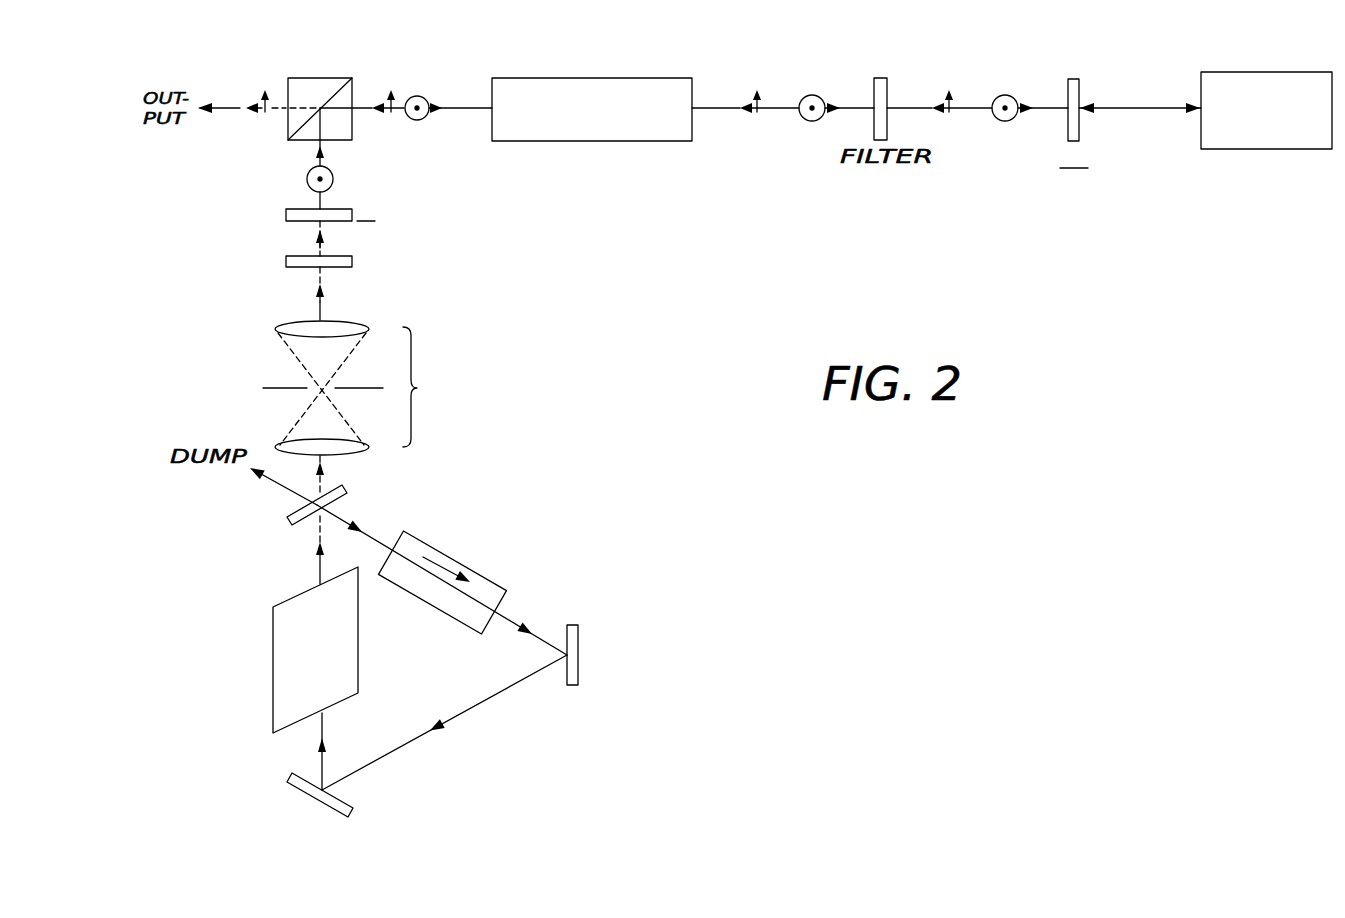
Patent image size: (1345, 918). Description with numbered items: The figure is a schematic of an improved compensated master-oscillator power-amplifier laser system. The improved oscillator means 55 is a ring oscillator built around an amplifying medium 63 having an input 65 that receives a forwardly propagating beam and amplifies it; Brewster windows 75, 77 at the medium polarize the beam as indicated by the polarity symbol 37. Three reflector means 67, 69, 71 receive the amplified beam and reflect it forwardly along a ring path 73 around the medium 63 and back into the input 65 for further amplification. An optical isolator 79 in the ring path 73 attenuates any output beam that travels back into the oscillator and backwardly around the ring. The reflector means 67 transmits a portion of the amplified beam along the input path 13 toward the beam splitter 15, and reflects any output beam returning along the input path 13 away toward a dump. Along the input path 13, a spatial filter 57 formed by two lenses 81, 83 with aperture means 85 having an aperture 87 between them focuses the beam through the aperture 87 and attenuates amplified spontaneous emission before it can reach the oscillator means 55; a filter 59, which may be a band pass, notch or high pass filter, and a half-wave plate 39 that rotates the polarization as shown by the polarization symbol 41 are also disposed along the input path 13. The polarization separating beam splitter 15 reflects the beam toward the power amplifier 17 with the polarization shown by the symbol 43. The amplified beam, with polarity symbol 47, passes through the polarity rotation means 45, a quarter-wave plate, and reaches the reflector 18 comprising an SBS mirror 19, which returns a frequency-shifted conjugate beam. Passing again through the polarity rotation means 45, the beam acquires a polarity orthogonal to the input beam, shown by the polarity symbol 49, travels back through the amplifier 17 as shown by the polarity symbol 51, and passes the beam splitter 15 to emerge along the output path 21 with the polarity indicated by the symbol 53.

The input path 13 is at (312, 142).
The beam splitter 15 is at (352, 80).
The power amplifier 17 is at (590, 142).
The reflector 18 is at (1200, 128).
The SBS mirror 19 is at (1290, 149).
The output path 21 is at (222, 112).
The polarization symbol 37 is at (336, 244).
The half-wave plate 39 is at (286, 215).
The polarization symbol 41 is at (333, 180).
The polarization symbol 43 is at (424, 120).
The polarity rotation means 45 is at (1080, 128).
The polarity symbol 47 is at (806, 120).
The polarity symbol 49 is at (755, 112).
The polarity symbol 51 is at (388, 112).
The polarity symbol 53 is at (258, 113).
The improved oscillator means 55 is at (552, 558).
The spatial filter 57 is at (384, 324).
The filter 59 is at (286, 262).
The amplifying medium 63 is at (273, 648).
The input 65 is at (336, 714).
The reflector means 67 is at (289, 518).
The reflector means 69 is at (578, 632).
The reflector means 71 is at (288, 780).
The ring path 73 is at (388, 753).
The Brewster window 75 is at (274, 606).
The Brewster window 77 is at (275, 733).
The optical isolator 79 is at (506, 590).
The lens 81 is at (287, 334).
The lens 83 is at (287, 445).
The aperture means 85 is at (275, 388).
The aperture 87 is at (296, 393).